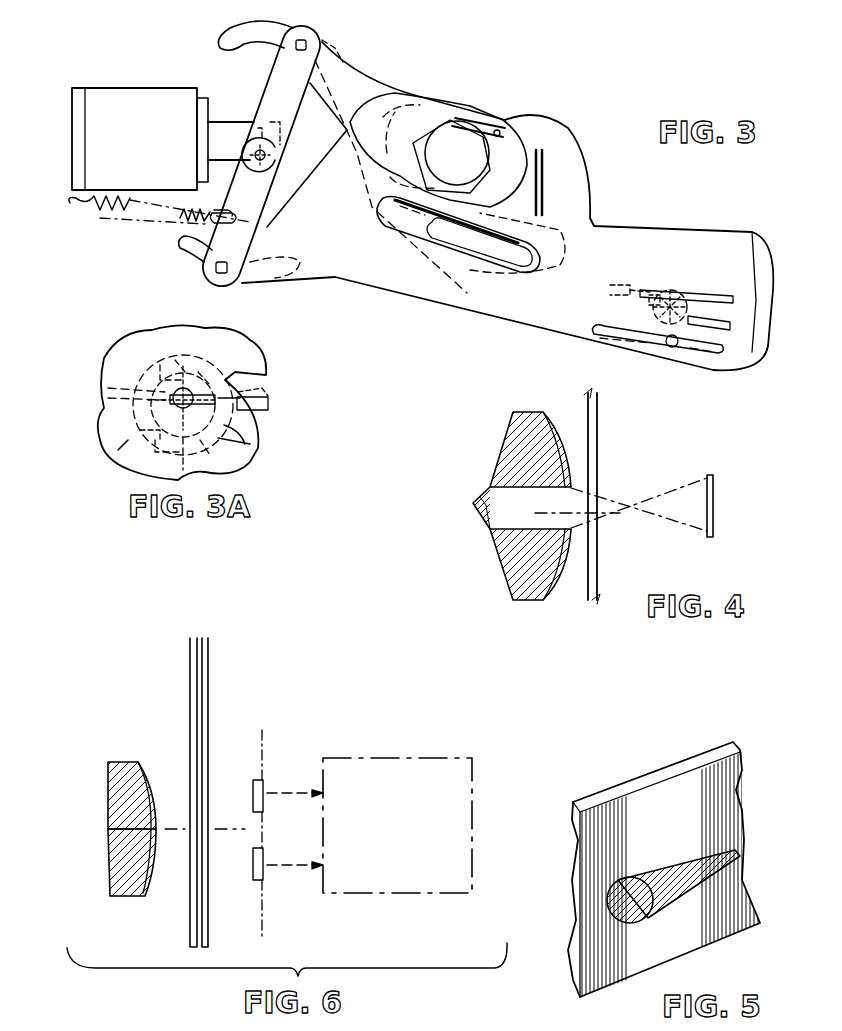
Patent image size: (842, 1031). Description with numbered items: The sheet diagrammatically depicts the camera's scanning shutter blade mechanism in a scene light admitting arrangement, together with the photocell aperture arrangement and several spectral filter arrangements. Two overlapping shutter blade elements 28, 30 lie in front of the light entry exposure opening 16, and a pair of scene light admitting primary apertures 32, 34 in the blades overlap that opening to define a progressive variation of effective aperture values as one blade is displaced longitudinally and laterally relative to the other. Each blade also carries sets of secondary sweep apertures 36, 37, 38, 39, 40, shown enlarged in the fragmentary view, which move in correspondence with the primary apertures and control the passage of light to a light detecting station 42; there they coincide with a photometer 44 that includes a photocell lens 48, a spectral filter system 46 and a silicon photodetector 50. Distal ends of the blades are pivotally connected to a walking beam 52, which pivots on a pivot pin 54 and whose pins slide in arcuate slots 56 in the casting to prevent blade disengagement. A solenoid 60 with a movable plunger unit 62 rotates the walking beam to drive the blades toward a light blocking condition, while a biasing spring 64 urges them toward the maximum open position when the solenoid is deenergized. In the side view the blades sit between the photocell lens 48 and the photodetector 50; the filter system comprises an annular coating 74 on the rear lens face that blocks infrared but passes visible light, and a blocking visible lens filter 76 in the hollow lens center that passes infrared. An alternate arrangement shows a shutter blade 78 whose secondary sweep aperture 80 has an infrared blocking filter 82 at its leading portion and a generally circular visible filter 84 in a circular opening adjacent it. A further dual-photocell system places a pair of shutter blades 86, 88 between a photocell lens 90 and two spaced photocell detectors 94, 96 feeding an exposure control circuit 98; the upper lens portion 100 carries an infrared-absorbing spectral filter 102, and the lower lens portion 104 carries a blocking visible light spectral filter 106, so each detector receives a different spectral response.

In FIG. 3, the light entry exposure opening 16 is at (470, 120).
In FIG. 3, the shutter blade element 28 is at (360, 60).
In FIG. 3, the shutter blade element 30 is at (546, 170).
In FIG. 3, the primary aperture 32 is at (422, 98).
In FIG. 3, the primary aperture 34 is at (505, 128).
In FIG. 3A, the secondary sweep aperture 36 is at (176, 360).
In FIG. 3A, the secondary sweep aperture 37 is at (160, 458).
In FIG. 3, the secondary sweep aperture 38 is at (700, 308).
In FIG. 3A, the secondary sweep aperture 38 is at (108, 394).
In FIG. 3, the secondary sweep aperture 39 is at (637, 283).
In FIG. 3A, the secondary sweep aperture 39 is at (115, 348).
In FIG. 3, the secondary sweep aperture 40 is at (718, 346).
In FIG. 3A, the secondary sweep aperture 40 is at (246, 448).
In FIG. 3, the light detecting station 42 is at (682, 283).
In FIG. 3A, the light detecting station 42 is at (118, 430).
In FIG. 3, the photometer 44 is at (648, 304).
In FIG. 3A, the photometer 44 is at (128, 449).
In FIG. 4, the photometer 44 is at (503, 493).
In FIG. 4, the spectral filter system 46 is at (566, 438).
In FIG. 4, the photocell lens 48 is at (497, 442).
In FIG. 4, the photodetector 50 is at (712, 475).
In FIG. 3, the walking beam 52 is at (297, 103).
In FIG. 3, the pivot pin 54 is at (266, 168).
In FIG. 3, the arcuate slot 56 is at (250, 46).
In FIG. 3, the solenoid 60 is at (139, 88).
In FIG. 3, the plunger unit 62 is at (231, 120).
In FIG. 3, the biasing spring 64 is at (80, 222).
In FIG. 4, the annular coating 74 is at (563, 585).
In FIG. 4, the blocking visible lens filter 76 is at (475, 502).
In FIG. 5, the shutter blade 78 is at (670, 782).
In FIG. 5, the secondary sweep aperture 80 is at (673, 886).
In FIG. 5, the infrared blocking filter 82 is at (670, 892).
In FIG. 5, the visible filter 84 is at (632, 922).
In FIG. 6, the shutter blade 86 is at (190, 944).
In FIG. 6, the shutter blade 88 is at (208, 944).
In FIG. 6, the photocell lens 90 is at (126, 822).
In FIG. 6, the photocell detector 94 is at (253, 793).
In FIG. 6, the photocell detector 96 is at (253, 872).
In FIG. 6, the exposure control circuit 98 is at (450, 893).
In FIG. 6, the upper lens portion 100 is at (148, 775).
In FIG. 6, the spectral filter 102 is at (148, 780).
In FIG. 6, the lower lens portion 104 is at (146, 876).
In FIG. 6, the blocking visible light spectral filter 106 is at (150, 873).